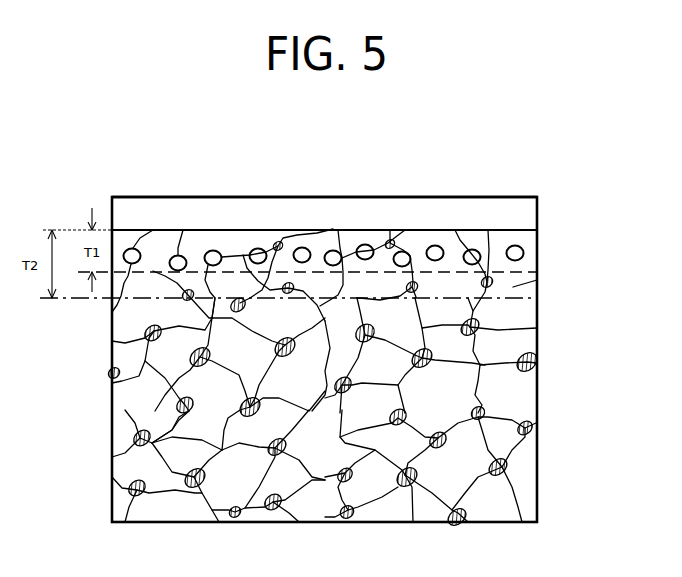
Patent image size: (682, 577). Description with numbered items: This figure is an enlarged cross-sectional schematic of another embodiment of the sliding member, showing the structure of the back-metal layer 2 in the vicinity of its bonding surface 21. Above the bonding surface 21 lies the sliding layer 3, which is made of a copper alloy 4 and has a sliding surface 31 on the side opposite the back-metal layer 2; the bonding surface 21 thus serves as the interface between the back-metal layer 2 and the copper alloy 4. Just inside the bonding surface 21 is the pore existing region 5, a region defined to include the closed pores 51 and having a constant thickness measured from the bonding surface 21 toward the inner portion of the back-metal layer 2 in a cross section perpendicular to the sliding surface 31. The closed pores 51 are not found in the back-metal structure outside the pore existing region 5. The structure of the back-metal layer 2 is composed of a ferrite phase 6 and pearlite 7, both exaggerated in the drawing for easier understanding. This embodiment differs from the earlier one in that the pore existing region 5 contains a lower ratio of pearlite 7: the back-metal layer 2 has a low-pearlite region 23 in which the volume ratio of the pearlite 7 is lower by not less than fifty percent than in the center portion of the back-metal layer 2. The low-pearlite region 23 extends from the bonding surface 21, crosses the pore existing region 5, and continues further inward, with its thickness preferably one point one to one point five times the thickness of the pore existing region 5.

The back-metal layer 2 is at (541, 237).
The sliding layer 3 is at (540, 212).
The copper alloy 4 is at (428, 207).
The pore existing region 5 is at (531, 249).
The ferrite phase 6 is at (515, 400).
The pearlite 7 is at (535, 367).
The bonding surface 21 is at (163, 222).
The low-pearlite region 23 is at (535, 291).
The sliding surface 31 is at (312, 205).
The closed pores 51 is at (535, 263).